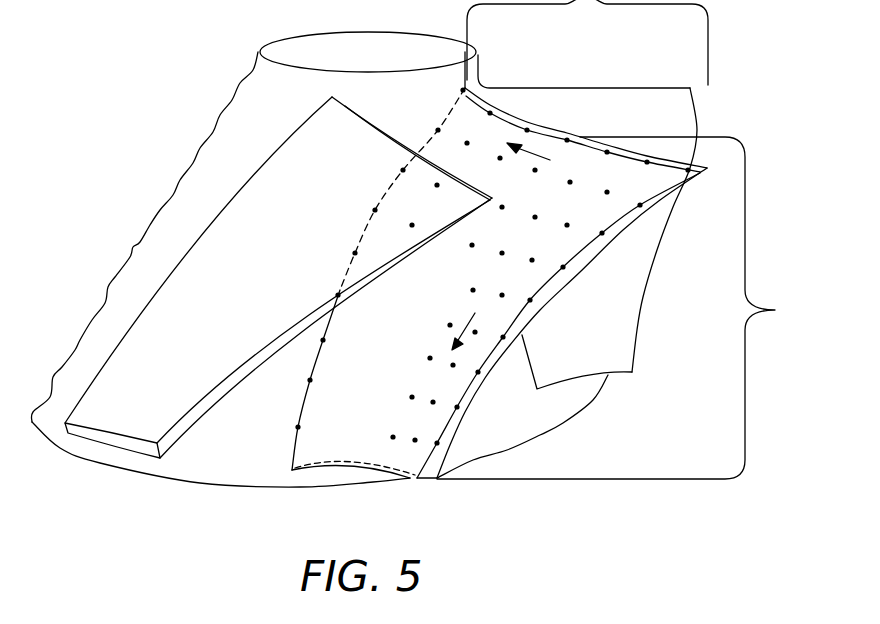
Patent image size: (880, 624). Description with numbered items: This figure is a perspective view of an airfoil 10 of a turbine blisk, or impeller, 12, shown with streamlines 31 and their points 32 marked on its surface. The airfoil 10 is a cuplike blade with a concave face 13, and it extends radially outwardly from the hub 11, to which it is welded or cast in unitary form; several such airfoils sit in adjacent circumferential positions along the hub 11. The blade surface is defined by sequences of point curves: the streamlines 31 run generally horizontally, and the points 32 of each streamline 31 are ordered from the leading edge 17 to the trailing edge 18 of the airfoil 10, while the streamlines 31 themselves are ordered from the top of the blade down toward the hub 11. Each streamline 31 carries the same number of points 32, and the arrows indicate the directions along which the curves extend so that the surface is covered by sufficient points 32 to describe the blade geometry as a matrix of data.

The airfoil 10 is at (467, 227).
The hub 11 is at (253, 434).
The turbine blisk 12 is at (562, 268).
The concave face 13 is at (378, 354).
The leading edge 17 is at (551, 127).
The trailing edge 18 is at (410, 479).
The streamlines 31 is at (619, 239).
The points 32 is at (534, 214).